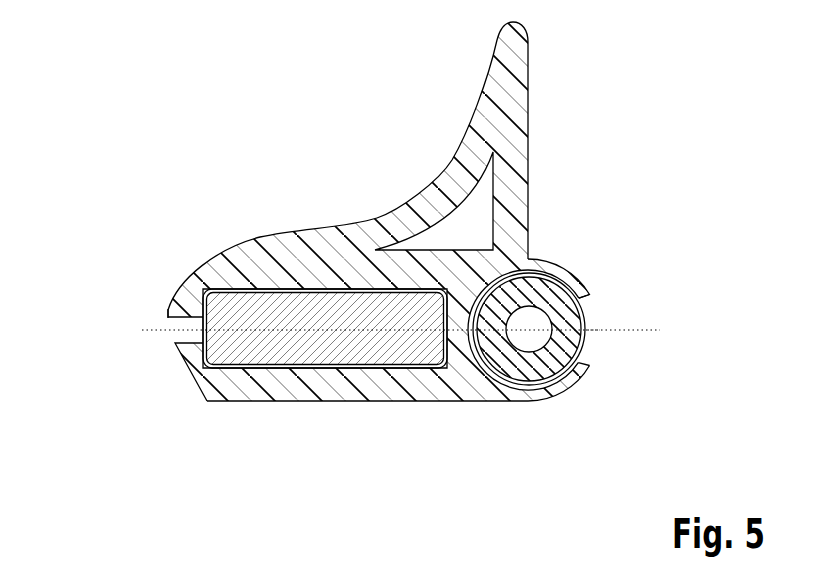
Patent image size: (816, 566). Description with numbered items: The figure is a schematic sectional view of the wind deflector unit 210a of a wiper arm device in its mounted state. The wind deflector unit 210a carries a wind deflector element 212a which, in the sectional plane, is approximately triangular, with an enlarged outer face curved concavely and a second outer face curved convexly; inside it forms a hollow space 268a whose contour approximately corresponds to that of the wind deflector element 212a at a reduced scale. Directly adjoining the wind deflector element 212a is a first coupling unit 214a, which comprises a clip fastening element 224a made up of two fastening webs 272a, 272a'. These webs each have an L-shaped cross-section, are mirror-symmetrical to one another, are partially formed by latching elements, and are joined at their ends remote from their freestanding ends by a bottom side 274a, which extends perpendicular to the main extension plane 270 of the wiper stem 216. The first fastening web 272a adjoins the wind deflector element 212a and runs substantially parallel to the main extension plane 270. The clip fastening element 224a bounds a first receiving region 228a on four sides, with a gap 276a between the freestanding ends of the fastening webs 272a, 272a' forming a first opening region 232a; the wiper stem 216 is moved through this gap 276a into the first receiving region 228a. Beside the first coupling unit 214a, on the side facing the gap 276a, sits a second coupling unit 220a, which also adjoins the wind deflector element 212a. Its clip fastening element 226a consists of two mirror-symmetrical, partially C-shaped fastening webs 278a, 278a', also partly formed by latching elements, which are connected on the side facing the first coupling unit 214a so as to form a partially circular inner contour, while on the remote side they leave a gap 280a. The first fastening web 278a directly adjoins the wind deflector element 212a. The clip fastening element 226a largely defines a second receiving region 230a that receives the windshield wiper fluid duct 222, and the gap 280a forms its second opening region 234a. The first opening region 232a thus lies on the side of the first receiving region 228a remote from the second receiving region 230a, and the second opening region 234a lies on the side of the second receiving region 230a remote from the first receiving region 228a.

The wind deflector unit 210a is at (122, 152).
The wind deflector element 212a is at (517, 110).
The first coupling unit 214a is at (230, 410).
The wiper stem 216 is at (260, 313).
The second coupling unit 220a is at (542, 412).
The windshield wiper fluid duct 222 is at (513, 368).
The clip fastening element 224a is at (293, 383).
The clip fastening element 226a is at (563, 387).
The first receiving region 228a is at (355, 293).
The second receiving region 230a is at (488, 378).
The first opening region 232a is at (163, 318).
The second opening region 234a is at (603, 350).
The hollow space 268a is at (473, 198).
The main extension plane 270 is at (645, 330).
The fastening web 272a is at (272, 237).
The fastening web 272a' is at (291, 414).
The bottom side 274a is at (548, 268).
The gap 276a is at (173, 333).
The fastening web 278a is at (623, 255).
The fastening web 278a' is at (632, 391).
The gap 280a is at (593, 318).